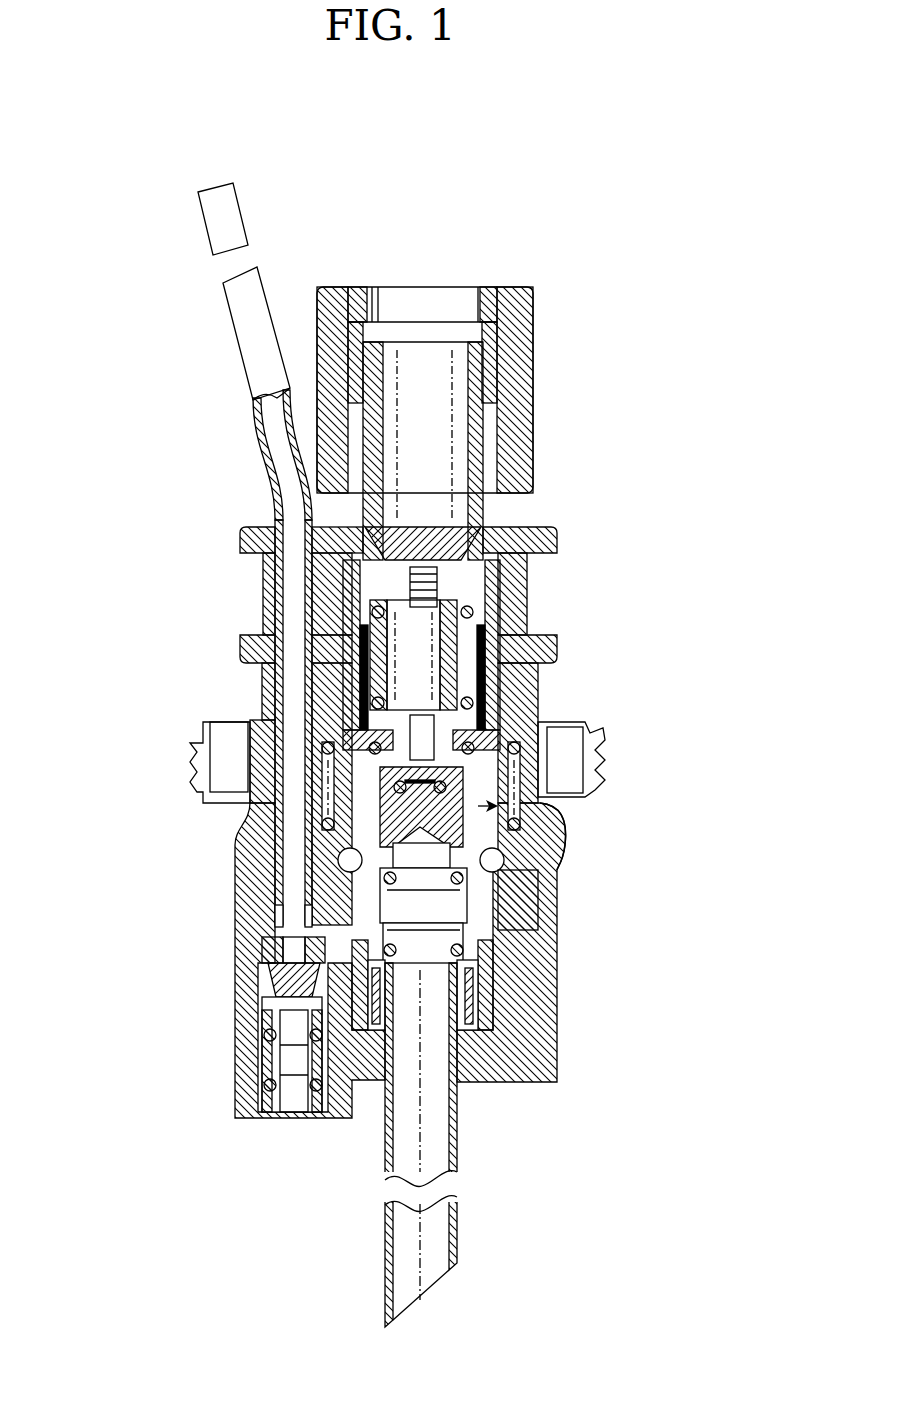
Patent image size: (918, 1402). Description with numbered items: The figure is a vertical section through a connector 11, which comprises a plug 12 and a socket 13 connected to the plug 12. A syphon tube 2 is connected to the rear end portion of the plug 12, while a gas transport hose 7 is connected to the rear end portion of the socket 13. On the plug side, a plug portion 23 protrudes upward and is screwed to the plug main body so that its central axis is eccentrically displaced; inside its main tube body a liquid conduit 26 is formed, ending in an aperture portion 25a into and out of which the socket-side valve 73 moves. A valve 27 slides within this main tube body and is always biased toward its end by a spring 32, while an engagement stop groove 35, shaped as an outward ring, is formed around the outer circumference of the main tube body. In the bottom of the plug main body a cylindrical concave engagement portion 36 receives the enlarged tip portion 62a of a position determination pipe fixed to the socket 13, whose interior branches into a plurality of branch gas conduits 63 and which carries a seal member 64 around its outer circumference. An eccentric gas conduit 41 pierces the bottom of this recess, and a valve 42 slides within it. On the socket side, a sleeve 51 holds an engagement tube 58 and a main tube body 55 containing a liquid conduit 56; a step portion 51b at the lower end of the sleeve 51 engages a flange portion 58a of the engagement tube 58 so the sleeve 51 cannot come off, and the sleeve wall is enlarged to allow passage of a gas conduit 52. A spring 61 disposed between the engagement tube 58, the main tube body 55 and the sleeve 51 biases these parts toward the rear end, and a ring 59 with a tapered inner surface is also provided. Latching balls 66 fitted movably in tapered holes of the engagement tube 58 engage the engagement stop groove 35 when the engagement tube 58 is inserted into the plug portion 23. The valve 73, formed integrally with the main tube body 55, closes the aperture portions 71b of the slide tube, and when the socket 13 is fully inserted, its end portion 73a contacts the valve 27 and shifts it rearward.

The syphon tube 2 is at (457, 1210).
The gas transport hose 7 is at (242, 208).
The connector 11 is at (719, 395).
The plug 12 is at (605, 852).
The socket 13 is at (632, 552).
The plug portion 23 is at (600, 790).
The aperture portion 25a is at (500, 710).
The liquid conduit 26 is at (500, 1000).
The valve 27 is at (485, 765).
The spring 32 is at (495, 950).
The engagement stop groove 35 is at (470, 880).
The concave engagement portion 36 is at (262, 945).
The gas conduit 41 is at (290, 1063).
The valve 42 is at (265, 1040).
The sleeve 51 is at (472, 728).
The step portion 51b is at (525, 860).
The gas conduit 52 is at (292, 690).
The main tube body 55 is at (510, 675).
The liquid conduit 56 is at (487, 630).
The engagement tube 58 is at (330, 898).
The flange portion 58a is at (550, 905).
The ring 59 is at (562, 842).
The spring 61 is at (540, 820).
The enlarged tip portion 62a is at (290, 990).
The branch gas conduits 63 is at (290, 838).
The seal member 64 is at (285, 950).
The latching ball 66 is at (540, 870).
The aperture portions 71b is at (367, 740).
The valve 73 is at (413, 645).
The end portion 73a is at (490, 723).